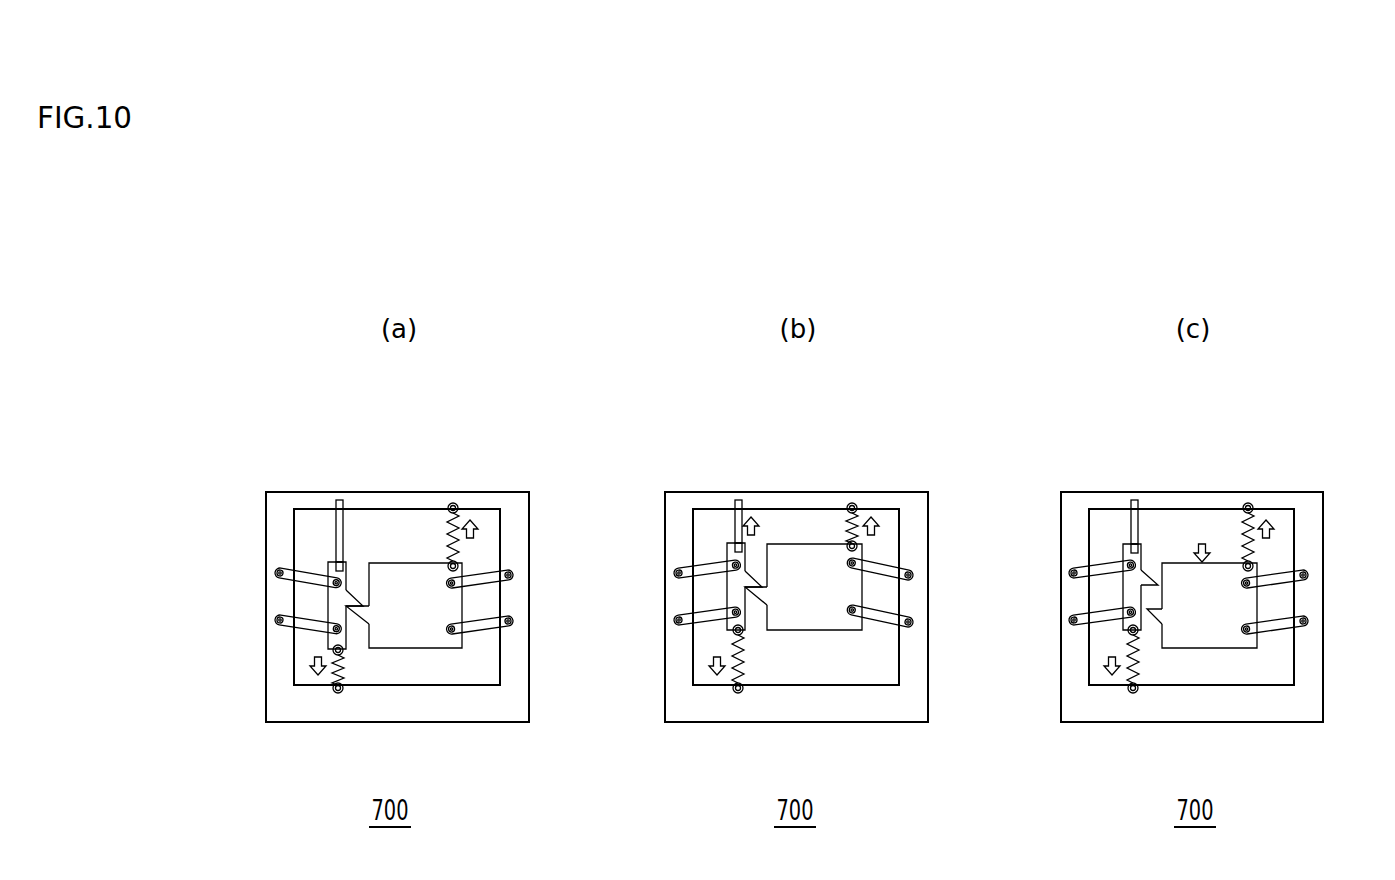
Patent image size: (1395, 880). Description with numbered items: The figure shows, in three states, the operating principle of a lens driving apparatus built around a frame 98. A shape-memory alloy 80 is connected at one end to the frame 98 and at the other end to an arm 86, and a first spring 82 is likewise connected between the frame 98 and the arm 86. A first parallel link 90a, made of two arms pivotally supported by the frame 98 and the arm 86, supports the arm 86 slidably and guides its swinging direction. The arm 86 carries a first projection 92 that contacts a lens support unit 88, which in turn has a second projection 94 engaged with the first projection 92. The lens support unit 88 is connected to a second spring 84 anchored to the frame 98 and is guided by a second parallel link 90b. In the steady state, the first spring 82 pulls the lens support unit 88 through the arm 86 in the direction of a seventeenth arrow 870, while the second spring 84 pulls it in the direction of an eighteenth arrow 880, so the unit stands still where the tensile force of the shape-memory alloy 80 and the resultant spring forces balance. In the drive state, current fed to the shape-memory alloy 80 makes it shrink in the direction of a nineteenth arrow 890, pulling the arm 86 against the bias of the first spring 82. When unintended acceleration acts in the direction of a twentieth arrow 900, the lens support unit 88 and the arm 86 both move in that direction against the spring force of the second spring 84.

The shape-memory alloy 80 is at (340, 523).
The first spring 82 is at (343, 658).
The second spring 84 is at (449, 523).
The arm 86 is at (350, 578).
The lens support unit 88 is at (433, 648).
The first parallel link 90a is at (305, 612).
The second parallel link 90b is at (487, 617).
The first projection 92 is at (360, 598).
The second projection 94 is at (362, 623).
The frame 98 is at (266, 514).
The seventeenth arrow 870 is at (302, 655).
The eighteenth arrow 880 is at (478, 522).
The nineteenth arrow 890 is at (758, 516).
The twentieth arrow 900 is at (1210, 537).